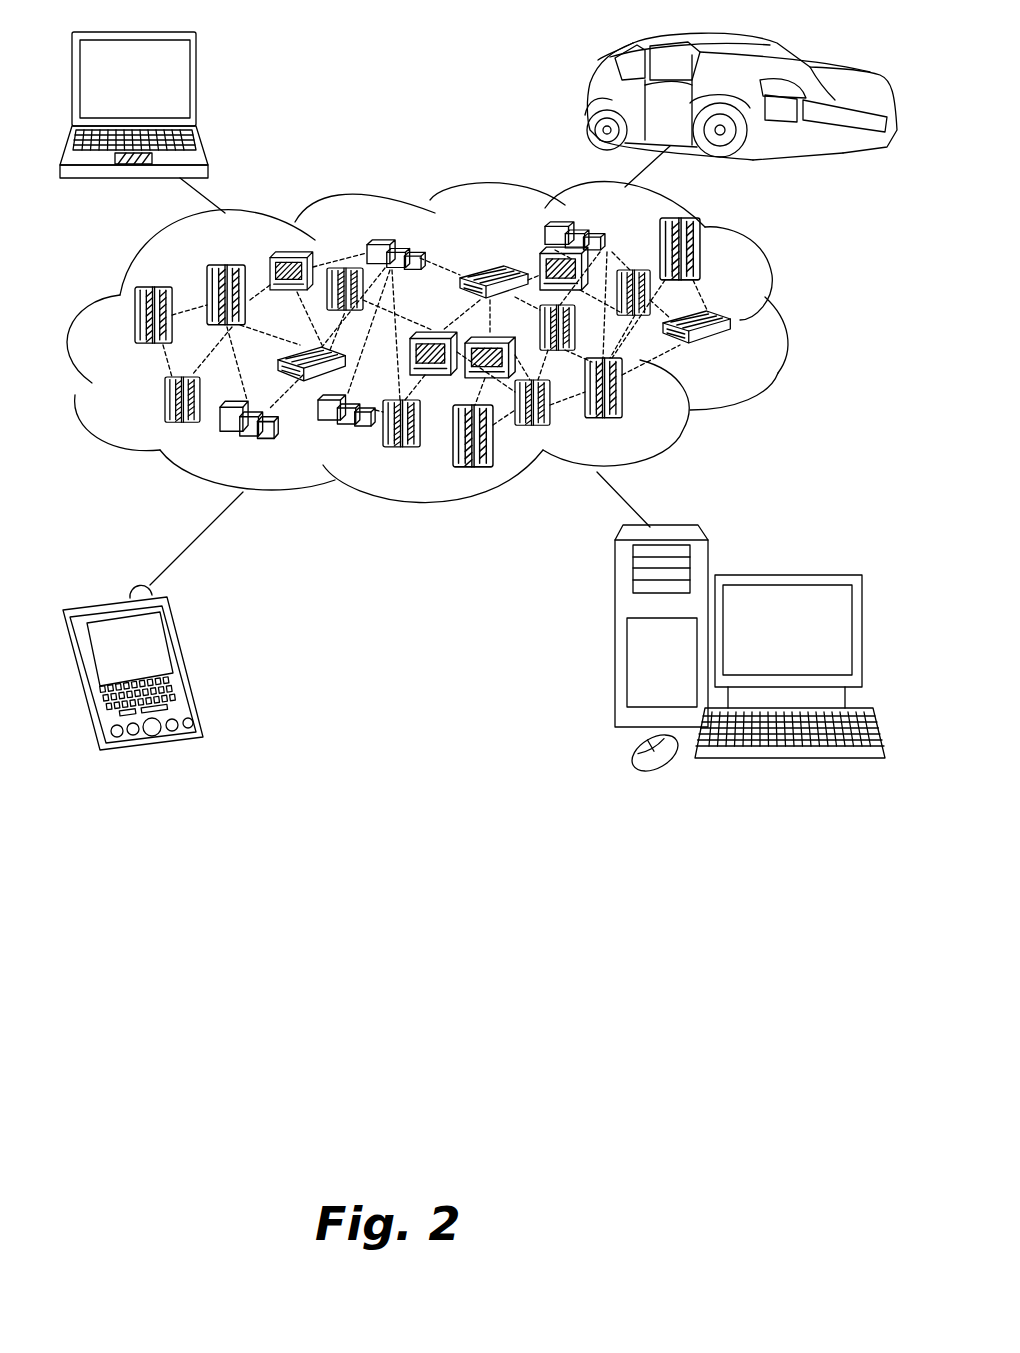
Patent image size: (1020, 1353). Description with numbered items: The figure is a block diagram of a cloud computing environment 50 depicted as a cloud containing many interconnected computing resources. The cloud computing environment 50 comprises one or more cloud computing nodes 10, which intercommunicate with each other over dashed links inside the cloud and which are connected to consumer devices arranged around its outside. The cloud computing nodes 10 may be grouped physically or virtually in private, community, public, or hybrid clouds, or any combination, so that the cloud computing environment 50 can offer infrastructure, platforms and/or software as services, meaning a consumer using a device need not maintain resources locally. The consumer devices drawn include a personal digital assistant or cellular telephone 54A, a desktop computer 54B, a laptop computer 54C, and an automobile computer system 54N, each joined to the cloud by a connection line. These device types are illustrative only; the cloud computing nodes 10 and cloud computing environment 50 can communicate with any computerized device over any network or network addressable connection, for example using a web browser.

The cloud computing node 10 is at (741, 353).
The cloud computing environment 50 is at (785, 328).
The personal digital assistant or cellular telephone 54A is at (188, 655).
The desktop computer 54B is at (786, 575).
The laptop computer 54C is at (196, 88).
The automobile computer system 54N is at (590, 100).